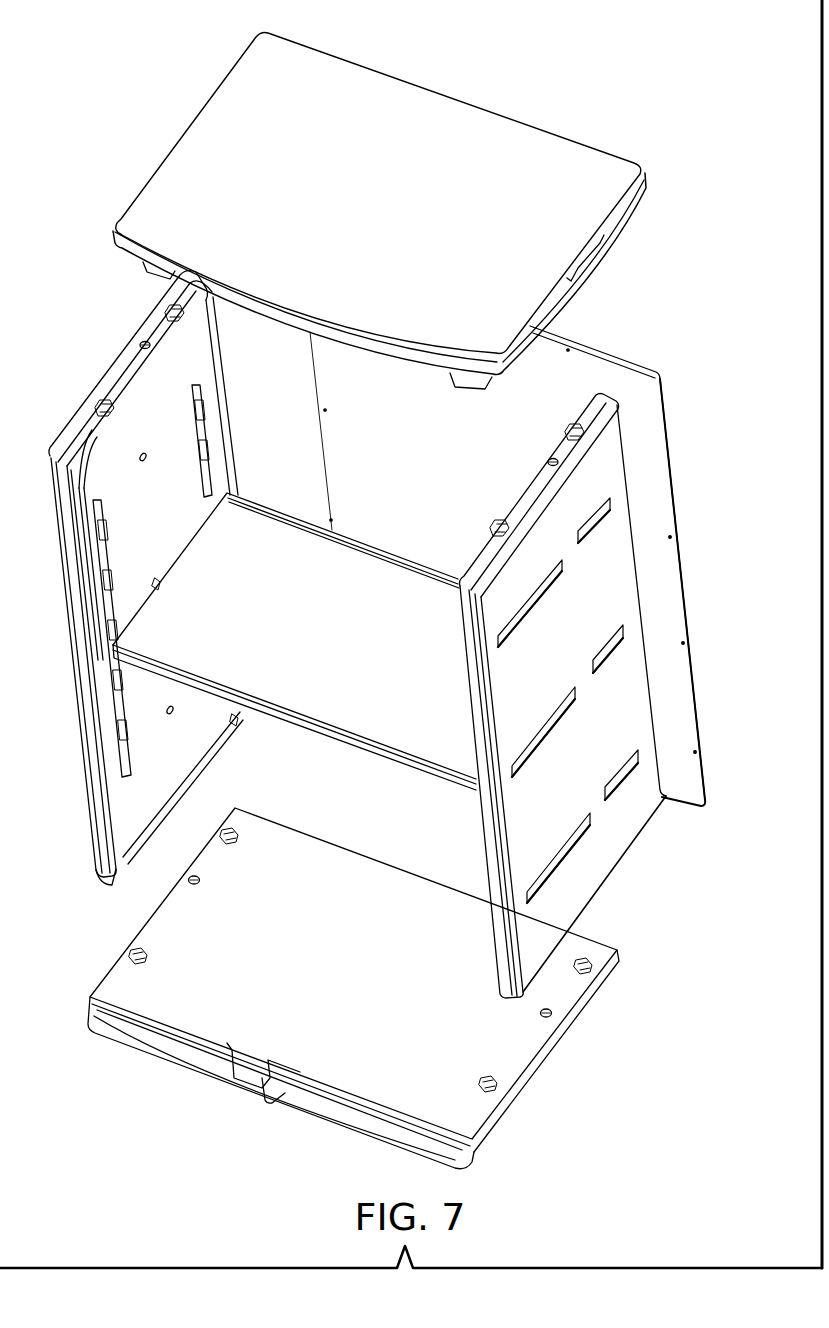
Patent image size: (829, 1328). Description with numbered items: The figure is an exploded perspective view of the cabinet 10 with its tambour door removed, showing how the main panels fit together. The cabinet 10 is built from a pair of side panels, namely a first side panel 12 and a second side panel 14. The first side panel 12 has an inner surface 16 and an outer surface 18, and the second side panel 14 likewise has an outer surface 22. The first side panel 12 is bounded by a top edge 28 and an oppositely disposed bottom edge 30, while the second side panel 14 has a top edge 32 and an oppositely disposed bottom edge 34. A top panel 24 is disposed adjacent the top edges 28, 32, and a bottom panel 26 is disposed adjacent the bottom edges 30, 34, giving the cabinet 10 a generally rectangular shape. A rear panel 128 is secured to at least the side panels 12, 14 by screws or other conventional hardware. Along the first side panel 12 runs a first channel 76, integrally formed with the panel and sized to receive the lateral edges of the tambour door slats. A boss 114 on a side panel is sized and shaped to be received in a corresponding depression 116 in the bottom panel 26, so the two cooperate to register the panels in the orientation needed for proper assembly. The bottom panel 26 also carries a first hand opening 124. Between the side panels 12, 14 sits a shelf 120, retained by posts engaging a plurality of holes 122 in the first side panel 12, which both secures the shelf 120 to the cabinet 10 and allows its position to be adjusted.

The cabinet 10 is at (165, 72).
The first side panel 12 is at (150, 578).
The second side panel 14 is at (574, 641).
The inner surface 16 is at (135, 805).
The outer surface 18 is at (139, 578).
The outer surface 22 is at (645, 810).
The top panel 24 is at (369, 213).
The bottom panel 26 is at (360, 988).
The top edge 28 is at (125, 372).
The bottom edge 30 is at (205, 758).
The top edge 32 is at (603, 405).
The bottom edge 34 is at (612, 882).
The first channel 76 is at (82, 505).
The boss 114 is at (565, 462).
The depression 116 is at (190, 882).
The shelf 120 is at (303, 644).
The holes 122 is at (205, 462).
The first hand opening 124 is at (262, 1078).
The rear panel 128 is at (660, 425).